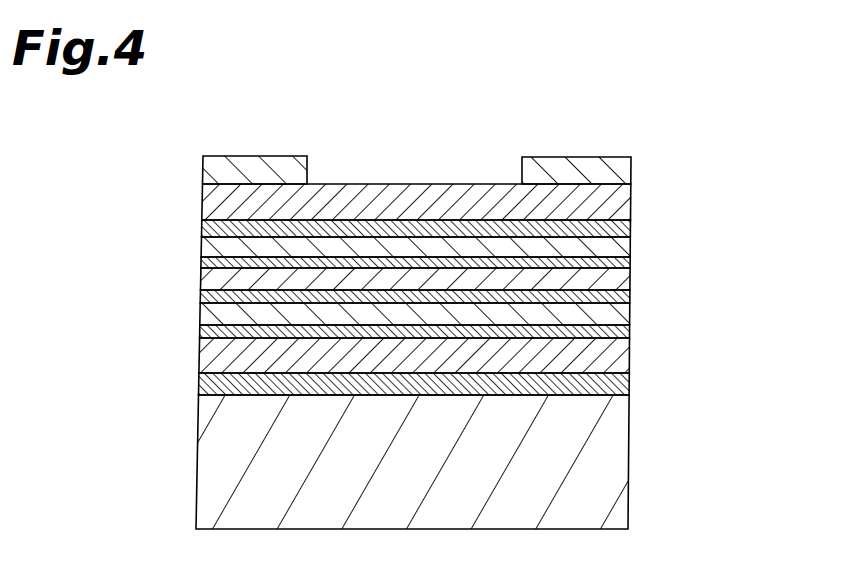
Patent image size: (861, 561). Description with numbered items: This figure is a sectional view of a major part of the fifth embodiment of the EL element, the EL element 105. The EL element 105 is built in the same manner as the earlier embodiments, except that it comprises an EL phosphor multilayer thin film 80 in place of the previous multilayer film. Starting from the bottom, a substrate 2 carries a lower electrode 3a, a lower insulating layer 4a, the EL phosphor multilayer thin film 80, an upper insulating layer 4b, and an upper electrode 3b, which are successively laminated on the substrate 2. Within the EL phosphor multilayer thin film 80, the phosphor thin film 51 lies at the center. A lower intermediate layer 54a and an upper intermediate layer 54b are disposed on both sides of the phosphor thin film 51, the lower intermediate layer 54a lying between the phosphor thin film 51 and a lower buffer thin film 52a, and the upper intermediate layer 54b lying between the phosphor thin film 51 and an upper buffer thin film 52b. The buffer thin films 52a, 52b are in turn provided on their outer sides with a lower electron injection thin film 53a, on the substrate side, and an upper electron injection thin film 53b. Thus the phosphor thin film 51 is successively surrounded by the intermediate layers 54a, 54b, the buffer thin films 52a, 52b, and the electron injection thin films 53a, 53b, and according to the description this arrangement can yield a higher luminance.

The EL element 105 is at (396, 116).
The substrate 2 is at (628, 453).
The lower electrode 3a is at (629, 384).
The upper electrode 3b is at (281, 156).
The lower insulating layer 4a is at (630, 355).
The upper insulating layer 4b is at (631, 200).
The phosphor thin film 51 is at (630, 278).
The lower buffer thin film 52a is at (630, 314).
The upper buffer thin film 52b is at (630, 248).
The lower electron injection thin film 53a is at (630, 332).
The upper electron injection thin film 53b is at (630, 228).
The lower intermediate layer 54a is at (630, 296).
The upper intermediate layer 54b is at (630, 264).
The EL phosphor multilayer thin film 80 is at (773, 198).